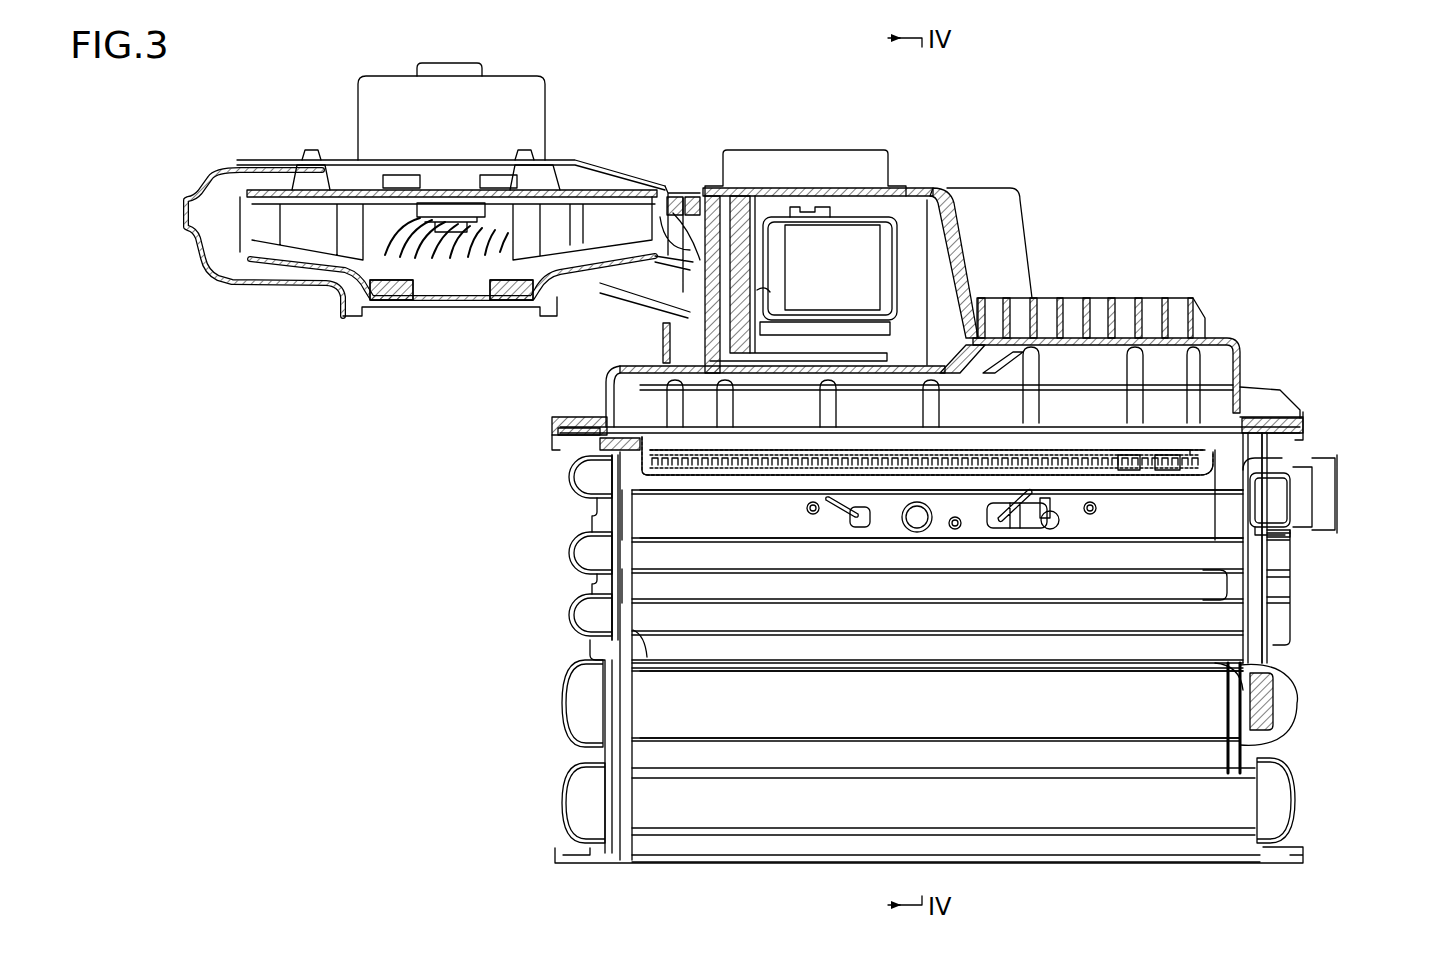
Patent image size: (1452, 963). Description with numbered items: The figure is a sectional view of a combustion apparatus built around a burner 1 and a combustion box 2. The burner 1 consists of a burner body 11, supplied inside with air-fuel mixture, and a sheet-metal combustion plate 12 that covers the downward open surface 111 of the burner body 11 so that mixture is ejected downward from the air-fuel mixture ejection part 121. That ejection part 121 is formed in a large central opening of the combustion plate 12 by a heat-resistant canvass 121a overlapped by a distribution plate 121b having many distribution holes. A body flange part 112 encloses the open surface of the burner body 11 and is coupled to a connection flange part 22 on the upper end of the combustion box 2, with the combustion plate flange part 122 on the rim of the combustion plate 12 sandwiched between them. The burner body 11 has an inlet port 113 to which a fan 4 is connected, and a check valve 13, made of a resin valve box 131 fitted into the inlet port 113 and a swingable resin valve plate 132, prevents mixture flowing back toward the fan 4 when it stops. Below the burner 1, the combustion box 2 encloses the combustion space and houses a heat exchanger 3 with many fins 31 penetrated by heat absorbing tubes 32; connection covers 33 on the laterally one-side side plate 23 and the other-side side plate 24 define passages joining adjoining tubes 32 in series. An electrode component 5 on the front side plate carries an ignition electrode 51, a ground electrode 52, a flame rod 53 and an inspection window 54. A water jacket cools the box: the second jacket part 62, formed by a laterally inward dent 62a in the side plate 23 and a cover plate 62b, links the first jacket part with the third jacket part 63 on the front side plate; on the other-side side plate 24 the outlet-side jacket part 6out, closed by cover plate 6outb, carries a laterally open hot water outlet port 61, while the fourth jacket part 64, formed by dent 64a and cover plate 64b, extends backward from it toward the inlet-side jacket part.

The burner 1 is at (1077, 293).
The combustion box 2 is at (1285, 626).
The heat exchanger 3 is at (948, 658).
The fan 4 is at (262, 160).
The electrode component 5 is at (1043, 547).
The burner body 11 is at (948, 220).
The combustion plate 12 is at (1217, 477).
The check valve 13 is at (867, 270).
The connection flange part 22 is at (568, 442).
The laterally one-side side plate 23 is at (587, 650).
The laterally other-side side plate 24 is at (1268, 585).
The fins 31 is at (1227, 677).
The heat absorbing tubes 32 is at (840, 777).
The connection covers 33 is at (570, 743).
The ignition electrode 51 is at (1057, 522).
The ground electrode 52 is at (1020, 525).
The flame rod 53 is at (837, 512).
The inspection window 54 is at (920, 518).
The hot water outlet port 61 is at (1327, 483).
The second jacket part 62 is at (600, 489).
The dent 62a is at (612, 613).
The cover plate 62b is at (570, 612).
The third jacket part 63 is at (728, 607).
The fourth jacket part 64 is at (1282, 509).
The dent 64a is at (1277, 470).
The cover plate 64b is at (1278, 527).
The outlet-side jacket part 6out is at (1297, 557).
The cover plate 6outb is at (1354, 557).
The downward open surface 111 is at (878, 442).
The body flange part 112 is at (572, 418).
The inlet port 113 is at (767, 286).
The air-fuel mixture ejection part 121 is at (1203, 532).
The canvass 121a is at (1127, 467).
The distribution plate 121b is at (1167, 467).
The combustion plate flange part 122 is at (603, 420).
The valve box 131 is at (778, 320).
The valve plate 132 is at (880, 293).